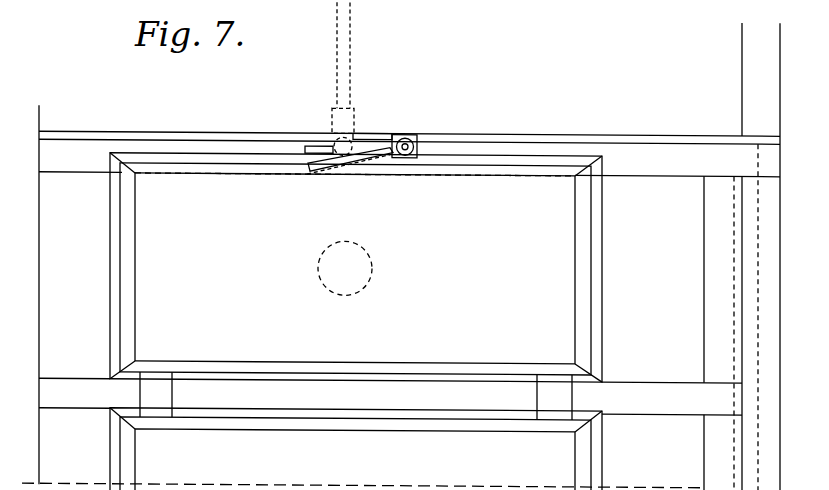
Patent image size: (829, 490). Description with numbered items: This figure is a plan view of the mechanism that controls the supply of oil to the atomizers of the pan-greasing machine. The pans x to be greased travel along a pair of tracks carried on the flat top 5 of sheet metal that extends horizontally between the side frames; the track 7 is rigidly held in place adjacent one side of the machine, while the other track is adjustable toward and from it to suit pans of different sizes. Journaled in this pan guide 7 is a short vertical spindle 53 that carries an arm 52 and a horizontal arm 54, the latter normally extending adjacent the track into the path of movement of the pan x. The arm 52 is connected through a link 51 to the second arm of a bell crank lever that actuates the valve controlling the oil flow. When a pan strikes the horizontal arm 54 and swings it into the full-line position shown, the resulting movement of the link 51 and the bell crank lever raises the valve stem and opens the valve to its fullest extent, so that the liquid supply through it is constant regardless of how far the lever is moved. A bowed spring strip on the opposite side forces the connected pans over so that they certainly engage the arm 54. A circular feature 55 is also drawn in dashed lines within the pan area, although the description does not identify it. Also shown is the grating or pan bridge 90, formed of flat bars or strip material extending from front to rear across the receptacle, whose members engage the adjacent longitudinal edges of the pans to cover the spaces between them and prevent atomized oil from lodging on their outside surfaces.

The track 7 is at (650, 142).
The link 51 is at (350, 58).
The arm 52 is at (370, 143).
The vertical spindle 53 is at (412, 141).
The horizontal arm 54 is at (321, 141).
The circular opening 55 is at (373, 265).
The pan bridge 90 is at (645, 386).
The flat top 5 is at (752, 460).
The pan x is at (240, 196).